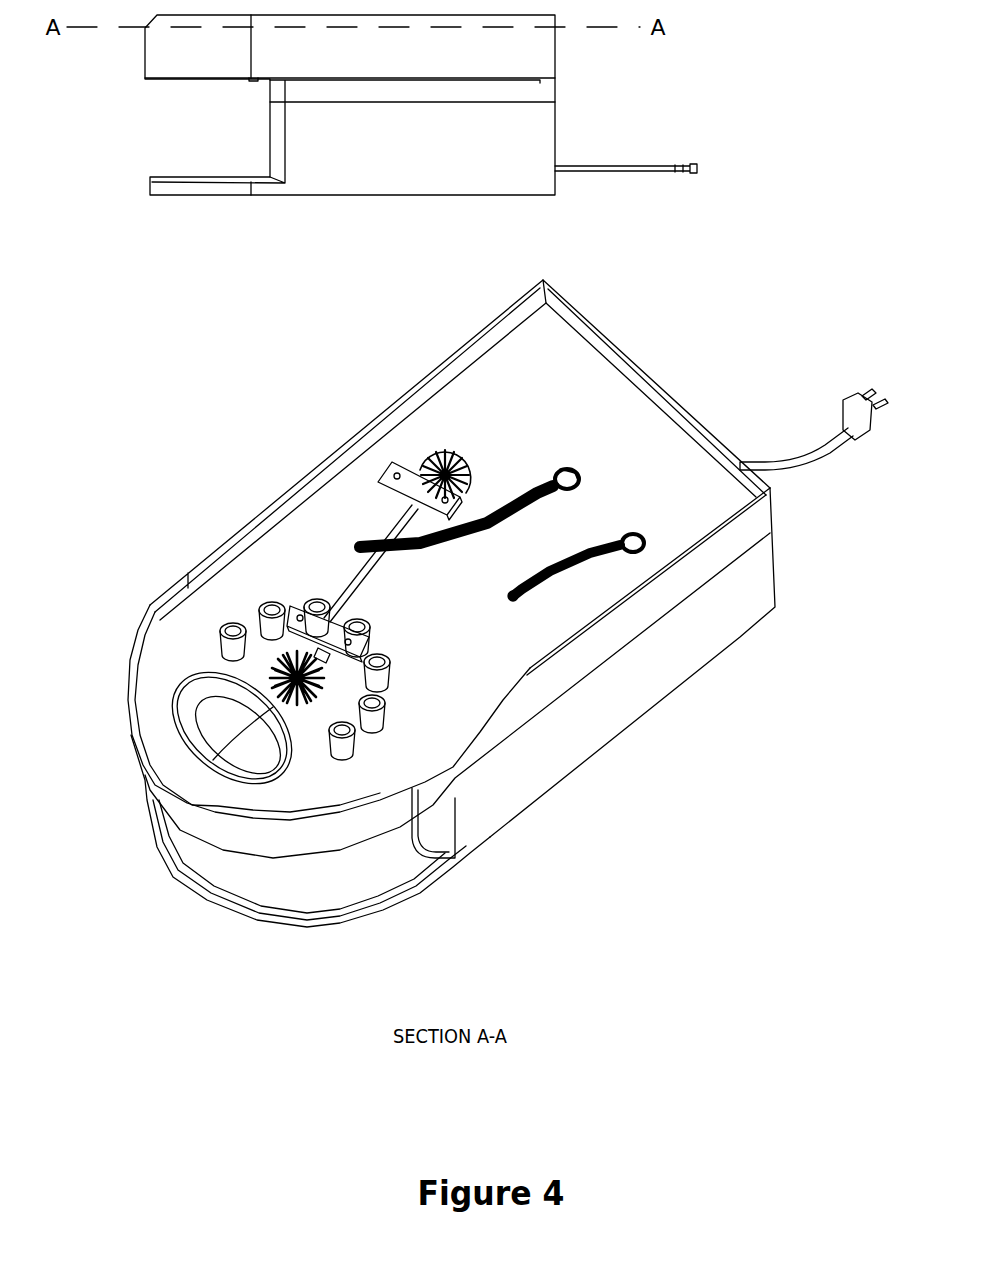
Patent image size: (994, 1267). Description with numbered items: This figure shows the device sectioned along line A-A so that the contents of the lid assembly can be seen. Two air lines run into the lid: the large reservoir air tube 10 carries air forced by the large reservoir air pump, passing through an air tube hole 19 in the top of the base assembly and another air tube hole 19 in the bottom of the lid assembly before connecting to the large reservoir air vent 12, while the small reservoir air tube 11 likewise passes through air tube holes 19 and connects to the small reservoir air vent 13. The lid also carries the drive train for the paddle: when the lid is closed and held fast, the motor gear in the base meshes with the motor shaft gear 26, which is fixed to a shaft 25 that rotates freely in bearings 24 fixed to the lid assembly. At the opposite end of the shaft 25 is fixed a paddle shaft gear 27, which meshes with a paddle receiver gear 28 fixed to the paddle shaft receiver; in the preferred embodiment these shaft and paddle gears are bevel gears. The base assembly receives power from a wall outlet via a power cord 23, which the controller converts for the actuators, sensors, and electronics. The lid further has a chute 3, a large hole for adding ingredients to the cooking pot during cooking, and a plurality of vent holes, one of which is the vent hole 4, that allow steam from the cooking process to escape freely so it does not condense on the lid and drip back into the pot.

The chute 3 is at (250, 765).
The vent hole 4 is at (386, 705).
The large reservoir air tube 10 is at (634, 555).
The small reservoir air tube 11 is at (552, 488).
The large reservoir air vent 12 is at (542, 593).
The small reservoir air vent 13 is at (352, 546).
The air tube hole 19 is at (583, 476).
The power cord 23 is at (843, 407).
The bearings 24 is at (407, 472).
The shaft 25 is at (288, 612).
The motor shaft gear 26 is at (430, 455).
The paddle shaft gear 27 is at (228, 628).
The paddle receiver gear 28 is at (320, 738).